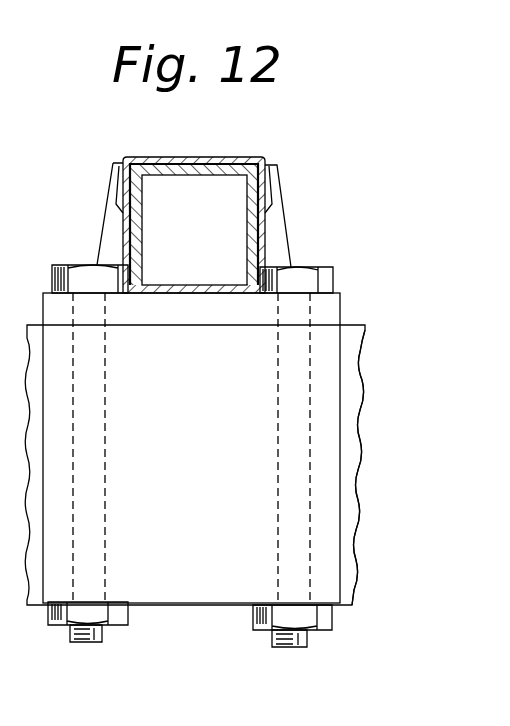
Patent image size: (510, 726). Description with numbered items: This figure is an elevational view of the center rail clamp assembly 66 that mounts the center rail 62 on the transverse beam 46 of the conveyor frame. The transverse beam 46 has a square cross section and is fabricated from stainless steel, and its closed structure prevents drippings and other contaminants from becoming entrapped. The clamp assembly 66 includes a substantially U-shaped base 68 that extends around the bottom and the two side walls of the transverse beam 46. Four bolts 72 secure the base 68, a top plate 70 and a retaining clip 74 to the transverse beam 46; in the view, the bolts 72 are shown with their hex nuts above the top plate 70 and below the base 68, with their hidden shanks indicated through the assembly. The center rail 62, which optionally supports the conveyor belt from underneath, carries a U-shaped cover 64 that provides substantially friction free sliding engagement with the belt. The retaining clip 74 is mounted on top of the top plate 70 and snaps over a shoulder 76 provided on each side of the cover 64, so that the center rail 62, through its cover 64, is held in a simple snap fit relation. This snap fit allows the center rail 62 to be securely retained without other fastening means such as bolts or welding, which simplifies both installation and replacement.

The transverse beam 46 is at (347, 518).
The center rail 62 is at (253, 189).
The U-shaped cover 64 is at (262, 159).
The clamp assembly 66 is at (195, 197).
The U-shaped base 68 is at (340, 368).
The top plate 70 is at (333, 313).
The bolts 72 is at (83, 263).
The retaining clip 74 is at (104, 212).
The shoulder 76 is at (112, 206).